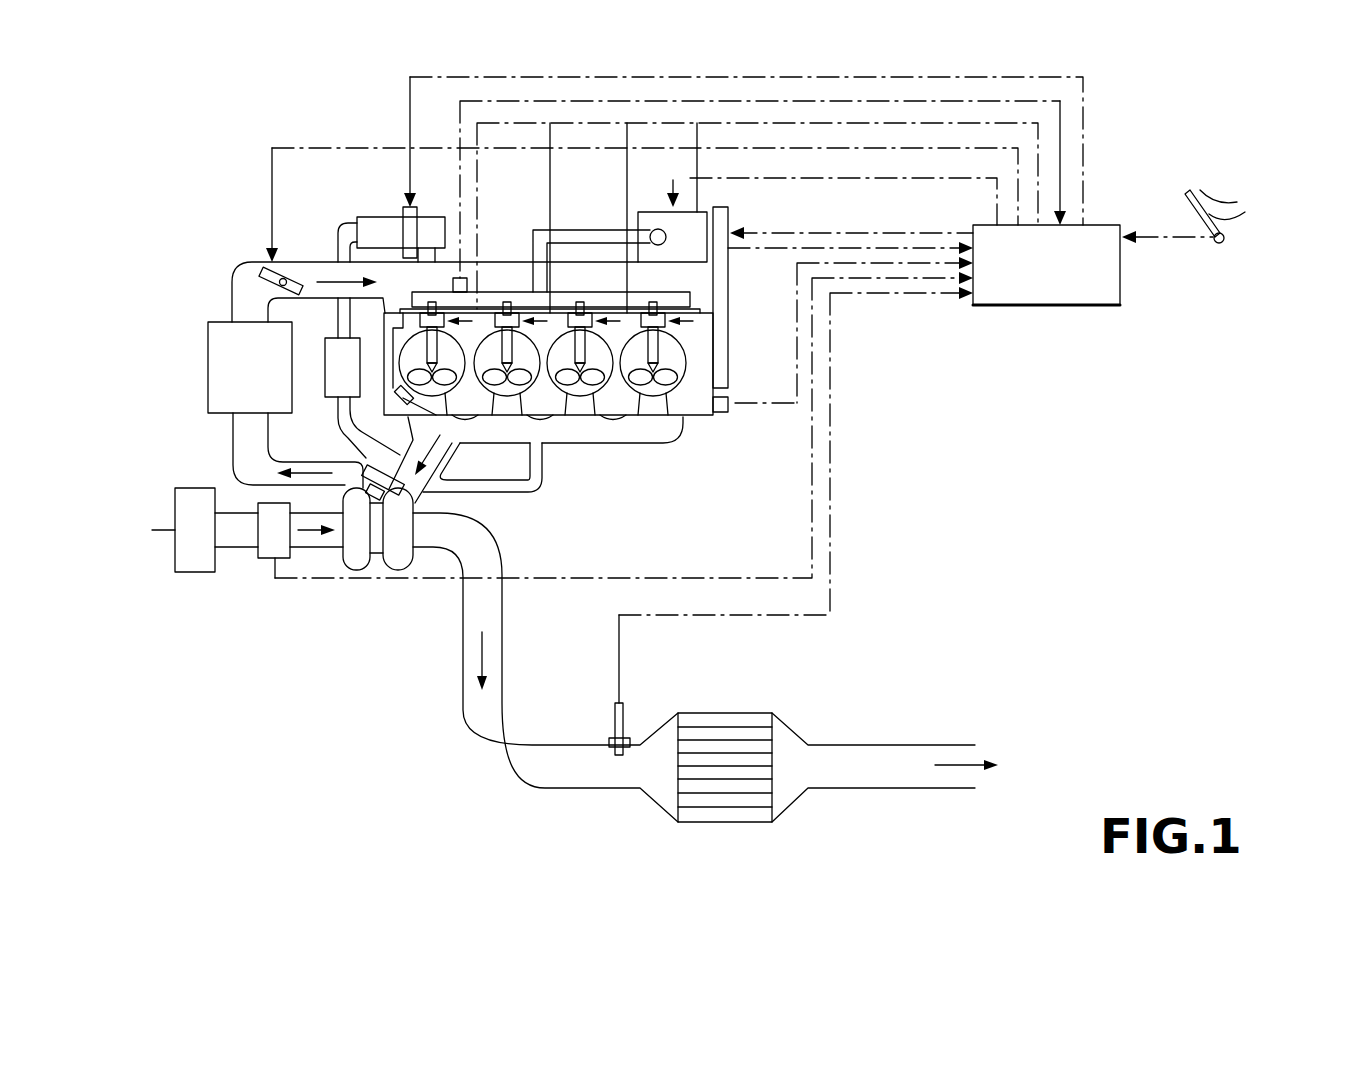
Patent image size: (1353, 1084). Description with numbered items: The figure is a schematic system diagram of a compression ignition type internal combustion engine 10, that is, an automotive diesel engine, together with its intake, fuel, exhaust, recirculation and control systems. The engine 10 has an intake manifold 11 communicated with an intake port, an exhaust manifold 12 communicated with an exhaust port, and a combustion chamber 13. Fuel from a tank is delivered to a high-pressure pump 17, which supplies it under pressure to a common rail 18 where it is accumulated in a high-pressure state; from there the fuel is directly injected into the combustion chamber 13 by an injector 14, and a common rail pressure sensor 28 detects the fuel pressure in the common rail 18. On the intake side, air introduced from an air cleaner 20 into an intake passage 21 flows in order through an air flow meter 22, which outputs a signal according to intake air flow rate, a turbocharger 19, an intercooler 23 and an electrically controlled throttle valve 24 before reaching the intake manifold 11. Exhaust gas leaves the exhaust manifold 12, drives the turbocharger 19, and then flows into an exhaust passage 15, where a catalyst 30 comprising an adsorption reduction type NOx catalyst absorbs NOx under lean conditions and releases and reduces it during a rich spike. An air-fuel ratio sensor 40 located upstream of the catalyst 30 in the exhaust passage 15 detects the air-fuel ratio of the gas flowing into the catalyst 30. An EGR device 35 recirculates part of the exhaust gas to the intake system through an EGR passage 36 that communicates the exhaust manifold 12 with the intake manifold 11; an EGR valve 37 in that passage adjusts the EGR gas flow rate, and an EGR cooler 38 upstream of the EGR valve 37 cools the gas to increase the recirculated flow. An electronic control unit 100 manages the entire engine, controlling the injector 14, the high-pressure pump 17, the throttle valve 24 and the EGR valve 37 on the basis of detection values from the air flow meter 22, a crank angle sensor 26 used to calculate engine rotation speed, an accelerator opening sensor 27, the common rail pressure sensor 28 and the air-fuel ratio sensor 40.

The internal combustion engine 10 is at (248, 196).
The intake manifold 11 is at (493, 258).
The exhaust manifold 12 is at (667, 447).
The combustion chamber 13 is at (680, 367).
The injector 14 is at (657, 352).
The exhaust passage 15 is at (473, 715).
The high-pressure pump 17 is at (620, 221).
The common rail 18 is at (587, 292).
The turbocharger 19 is at (351, 580).
The air cleaner 20 is at (181, 573).
The intake passage 21 is at (238, 522).
The air flow meter 22 is at (264, 560).
The intercooler 23 is at (220, 320).
The throttle valve 24 is at (263, 273).
The crank angle sensor 26 is at (722, 413).
The accelerator opening sensor 27 is at (1222, 243).
The common rail pressure sensor 28 is at (453, 283).
The catalyst 30 is at (730, 800).
The EGR device 35 is at (331, 217).
The EGR passage 36 is at (545, 470).
The EGR valve 37 is at (380, 237).
The EGR cooler 38 is at (324, 392).
The air-fuel ratio sensor 40 is at (623, 718).
The electronic control unit 100 is at (1060, 307).